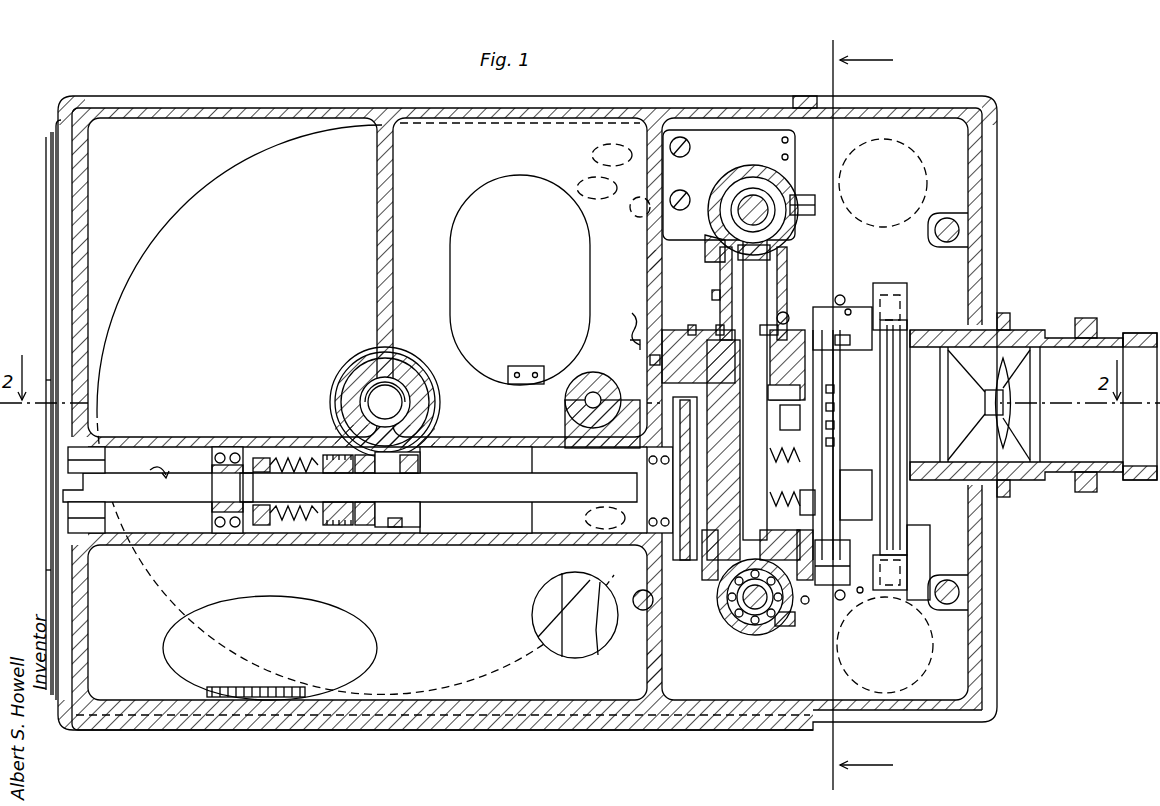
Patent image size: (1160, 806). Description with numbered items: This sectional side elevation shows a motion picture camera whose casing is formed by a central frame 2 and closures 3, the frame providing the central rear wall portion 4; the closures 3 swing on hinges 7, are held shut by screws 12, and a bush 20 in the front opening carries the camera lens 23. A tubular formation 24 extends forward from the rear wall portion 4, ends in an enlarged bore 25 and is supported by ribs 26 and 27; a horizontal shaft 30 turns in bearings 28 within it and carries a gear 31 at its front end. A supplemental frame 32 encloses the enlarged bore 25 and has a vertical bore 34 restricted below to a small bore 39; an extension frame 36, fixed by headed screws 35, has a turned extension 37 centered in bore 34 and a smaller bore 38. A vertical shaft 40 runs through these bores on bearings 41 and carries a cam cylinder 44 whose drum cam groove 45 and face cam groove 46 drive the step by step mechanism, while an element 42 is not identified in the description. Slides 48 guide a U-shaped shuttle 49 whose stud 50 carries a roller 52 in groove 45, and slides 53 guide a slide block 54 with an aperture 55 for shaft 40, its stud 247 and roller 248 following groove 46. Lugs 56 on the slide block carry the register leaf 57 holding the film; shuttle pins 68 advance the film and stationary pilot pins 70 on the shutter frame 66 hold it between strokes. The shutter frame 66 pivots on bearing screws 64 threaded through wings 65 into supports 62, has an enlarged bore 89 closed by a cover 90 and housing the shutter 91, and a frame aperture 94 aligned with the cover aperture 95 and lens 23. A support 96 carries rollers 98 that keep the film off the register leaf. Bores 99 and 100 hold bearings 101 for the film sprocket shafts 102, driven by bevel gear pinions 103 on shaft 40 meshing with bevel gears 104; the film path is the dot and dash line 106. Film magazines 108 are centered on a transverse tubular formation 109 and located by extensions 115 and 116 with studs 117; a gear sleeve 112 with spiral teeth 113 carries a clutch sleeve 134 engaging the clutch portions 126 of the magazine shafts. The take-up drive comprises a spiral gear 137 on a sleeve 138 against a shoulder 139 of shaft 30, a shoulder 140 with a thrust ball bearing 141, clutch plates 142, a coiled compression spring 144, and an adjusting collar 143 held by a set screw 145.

The central frame 2 is at (378, 255).
The closure 3 is at (900, 125).
The central rear wall portion 4 is at (68, 180).
The hinges 7 is at (46, 232).
The screws 12 is at (962, 228).
The bush 20 is at (1018, 330).
The camera lens 23 is at (1018, 402).
The tubular formation 24 is at (180, 440).
The enlarged bore 25 is at (640, 386).
The rib 26 is at (646, 257).
The rib 27 is at (648, 668).
The bearings 28 is at (236, 446).
The horizontal shaft 30 is at (188, 500).
The gear 31 is at (672, 410).
The supplemental frame 32 is at (770, 637).
The vertical bore 34 is at (722, 590).
The headed screws 35 is at (712, 295).
The extension frame 36 is at (716, 245).
The turned extension 37 is at (718, 330).
The vertical bore 38 is at (776, 325).
The small bore 39 is at (735, 612).
The vertically disposed shaft 40 is at (756, 280).
The bearing 41 is at (786, 304).
The sleeve 42 is at (760, 438).
The cam cylinder 44 is at (655, 358).
The cam groove 45 is at (742, 456).
The cam groove 46 is at (632, 340).
The slides 48 is at (826, 566).
The shuttle 49 is at (822, 545).
The stud 50 is at (835, 514).
The roller 52 is at (770, 524).
The slides 53 is at (692, 352).
The slide block 54 is at (690, 330).
The aperture 55 is at (770, 380).
The lugs 56 is at (834, 407).
The register leaf 57 is at (834, 389).
The supports 62 is at (852, 505).
The adjustable bearing screws 64 is at (842, 296).
The wings 65 is at (850, 310).
The shutter frame 66 is at (907, 578).
The shuttle pins 68 is at (834, 425).
The pilot pins 70 is at (834, 442).
The enlarged bore 89 is at (908, 542).
The cover 90 is at (905, 526).
The shutter 91 is at (905, 325).
The frame aperture 94 is at (840, 385).
The aperture 95 is at (906, 393).
The support 96 is at (838, 340).
The roller 98 is at (842, 328).
The transverse horizontal bore 99 is at (745, 625).
The transverse horizontal bore 100 is at (770, 195).
The bearings 101 is at (748, 640).
The film sprocket shaft 102 is at (772, 232).
The bevel gear pinion 103 is at (722, 278).
The bevel gear 104 is at (786, 178).
The dot and dash line 106 is at (928, 175).
The film magazines 108 is at (180, 215).
The transverse tubular formation 109 is at (338, 378).
The gear sleeve 112 is at (405, 358).
The spiral gear teeth 113 is at (378, 358).
The extension 115 is at (630, 315).
The extension 116 is at (633, 208).
The studs 117 is at (648, 205).
The enlarged clutch portion 126 is at (437, 398).
The clutch sleeve 134 is at (334, 394).
The spiral gear 137 is at (372, 523).
The sleeve 138 is at (405, 522).
The shoulder 139 is at (470, 470).
The shoulder 140 is at (432, 455).
The thrust ball bearing 141 is at (395, 527).
The clutch plates 142 is at (340, 523).
The adjusting collar 143 is at (262, 455).
The coiled compression spring 144 is at (268, 517).
The set screw 145 is at (254, 518).
The stud 247 is at (768, 392).
The roller 248 is at (796, 412).